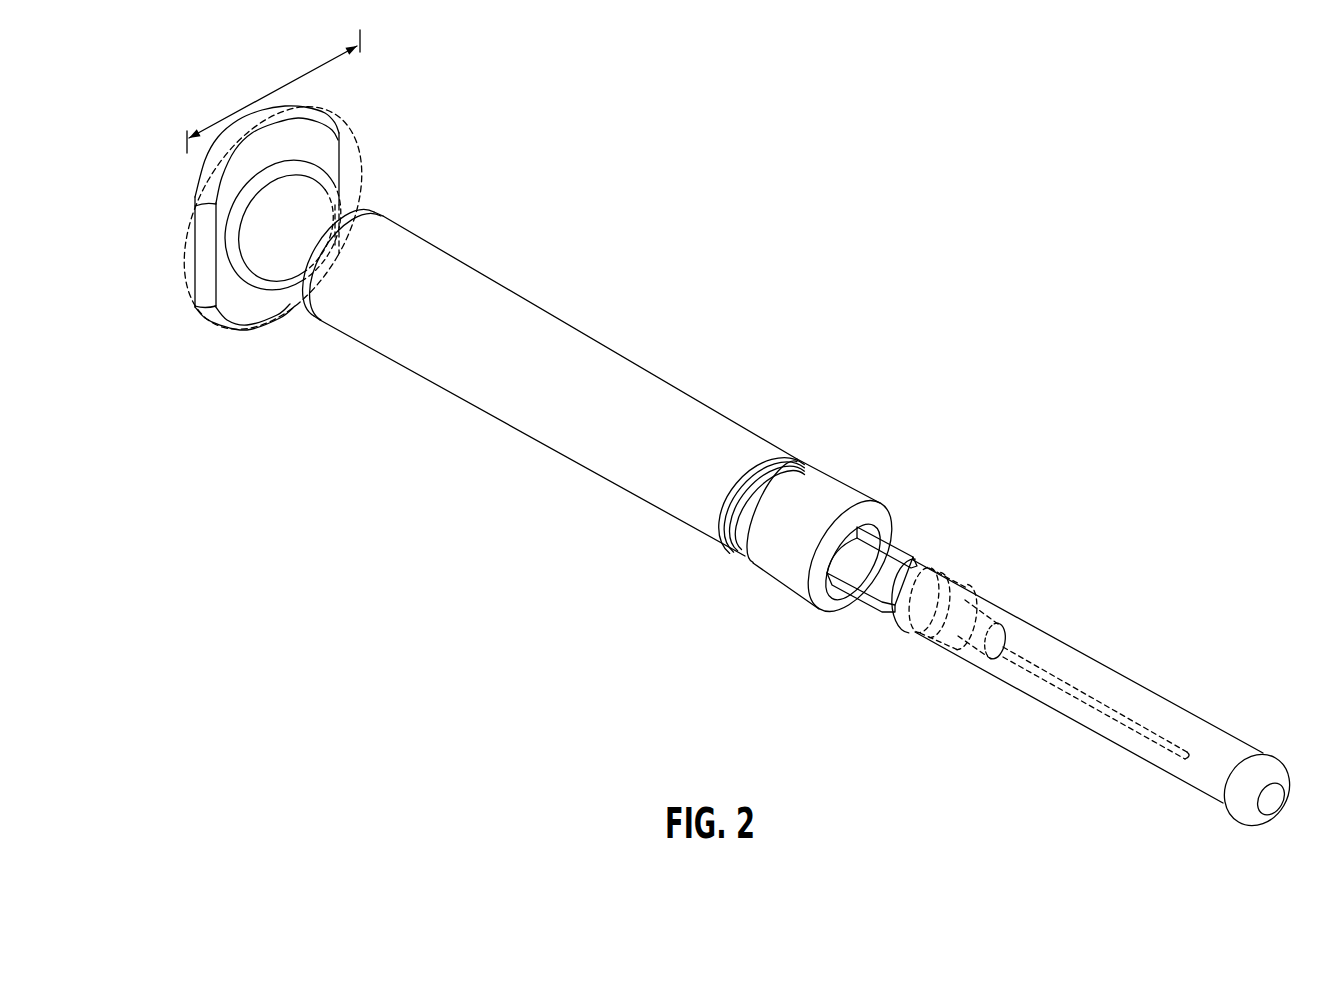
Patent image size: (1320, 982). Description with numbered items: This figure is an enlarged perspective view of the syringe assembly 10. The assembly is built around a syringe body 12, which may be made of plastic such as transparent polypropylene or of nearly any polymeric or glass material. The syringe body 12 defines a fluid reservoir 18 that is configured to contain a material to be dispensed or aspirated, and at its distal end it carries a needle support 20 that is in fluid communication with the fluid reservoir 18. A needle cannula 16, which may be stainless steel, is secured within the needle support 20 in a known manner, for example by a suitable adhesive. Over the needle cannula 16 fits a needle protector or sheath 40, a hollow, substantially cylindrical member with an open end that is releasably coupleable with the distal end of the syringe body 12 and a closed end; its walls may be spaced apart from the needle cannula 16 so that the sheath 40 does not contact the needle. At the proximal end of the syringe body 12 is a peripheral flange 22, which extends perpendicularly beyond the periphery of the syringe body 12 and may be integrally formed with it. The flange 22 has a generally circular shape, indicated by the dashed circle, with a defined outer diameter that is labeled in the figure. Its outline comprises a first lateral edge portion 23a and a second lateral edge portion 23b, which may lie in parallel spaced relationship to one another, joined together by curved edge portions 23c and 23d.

The syringe assembly 10 is at (700, 434).
The syringe body 12 is at (583, 341).
The needle cannula 16 is at (1095, 697).
The fluid reservoir 18 is at (672, 414).
The needle support 20 is at (970, 618).
The peripheral flange 22 is at (266, 224).
The first lateral edge portion 23a is at (187, 250).
The second lateral edge portion 23b is at (350, 156).
The curved edge portion 23c is at (197, 166).
The curved edge portion 23d is at (262, 348).
The needle protector or sheath 40 is at (1200, 733).